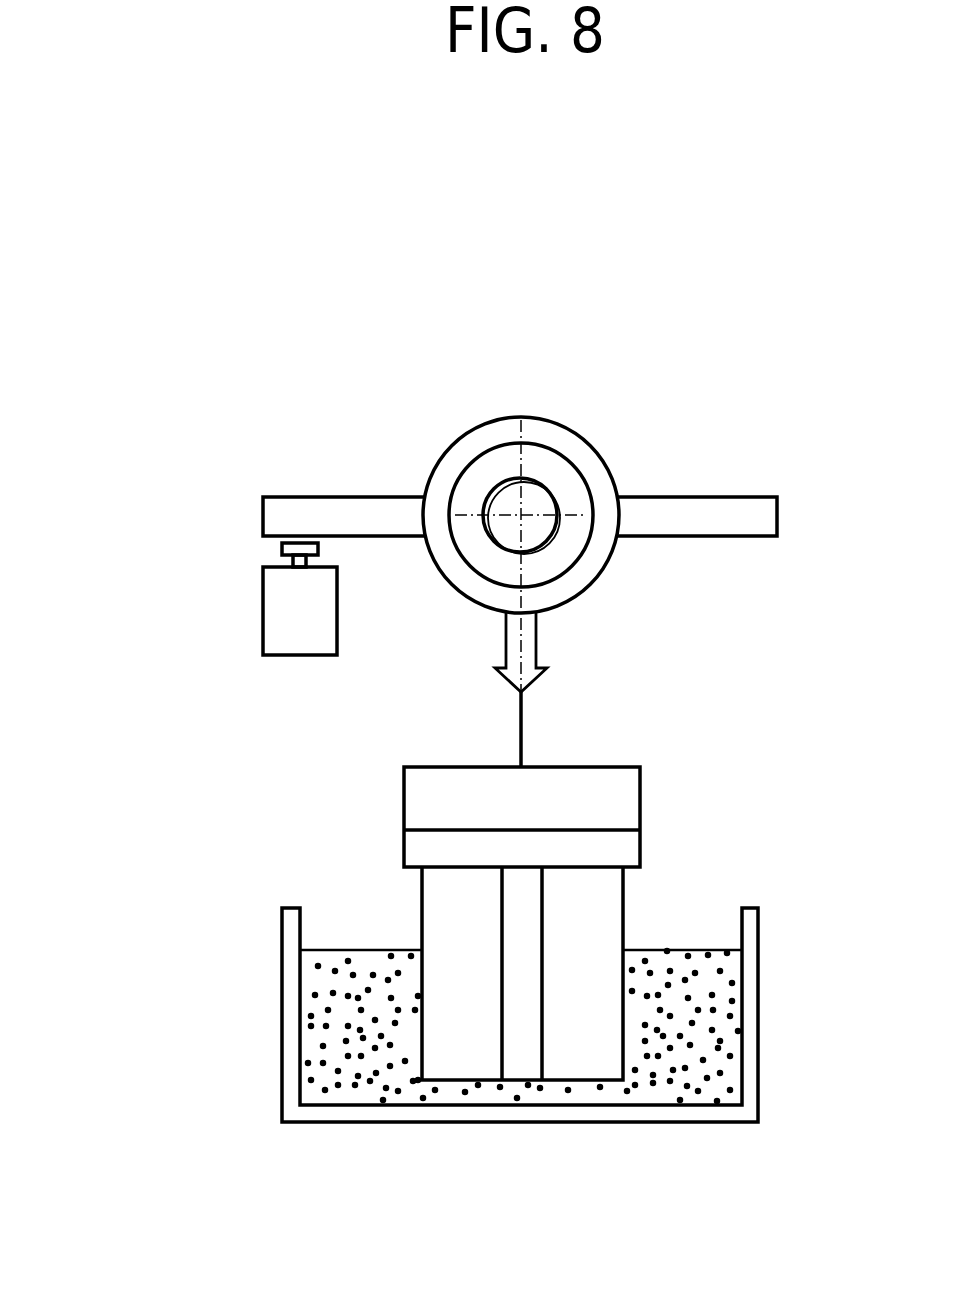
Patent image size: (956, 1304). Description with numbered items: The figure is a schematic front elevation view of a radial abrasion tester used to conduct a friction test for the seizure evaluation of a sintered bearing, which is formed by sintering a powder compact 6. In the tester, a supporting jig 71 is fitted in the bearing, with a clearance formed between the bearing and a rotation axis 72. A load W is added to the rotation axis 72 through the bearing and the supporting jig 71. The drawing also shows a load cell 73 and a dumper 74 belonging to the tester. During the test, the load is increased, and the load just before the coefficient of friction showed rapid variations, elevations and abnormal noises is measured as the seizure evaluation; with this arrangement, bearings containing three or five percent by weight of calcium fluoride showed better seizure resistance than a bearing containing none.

The powder compact 6 is at (475, 478).
The supporting jig 71 is at (616, 473).
The rotation axis 72 is at (534, 497).
The load cell 73 is at (275, 598).
The dumper 74 is at (358, 930).
The load W is at (470, 788).